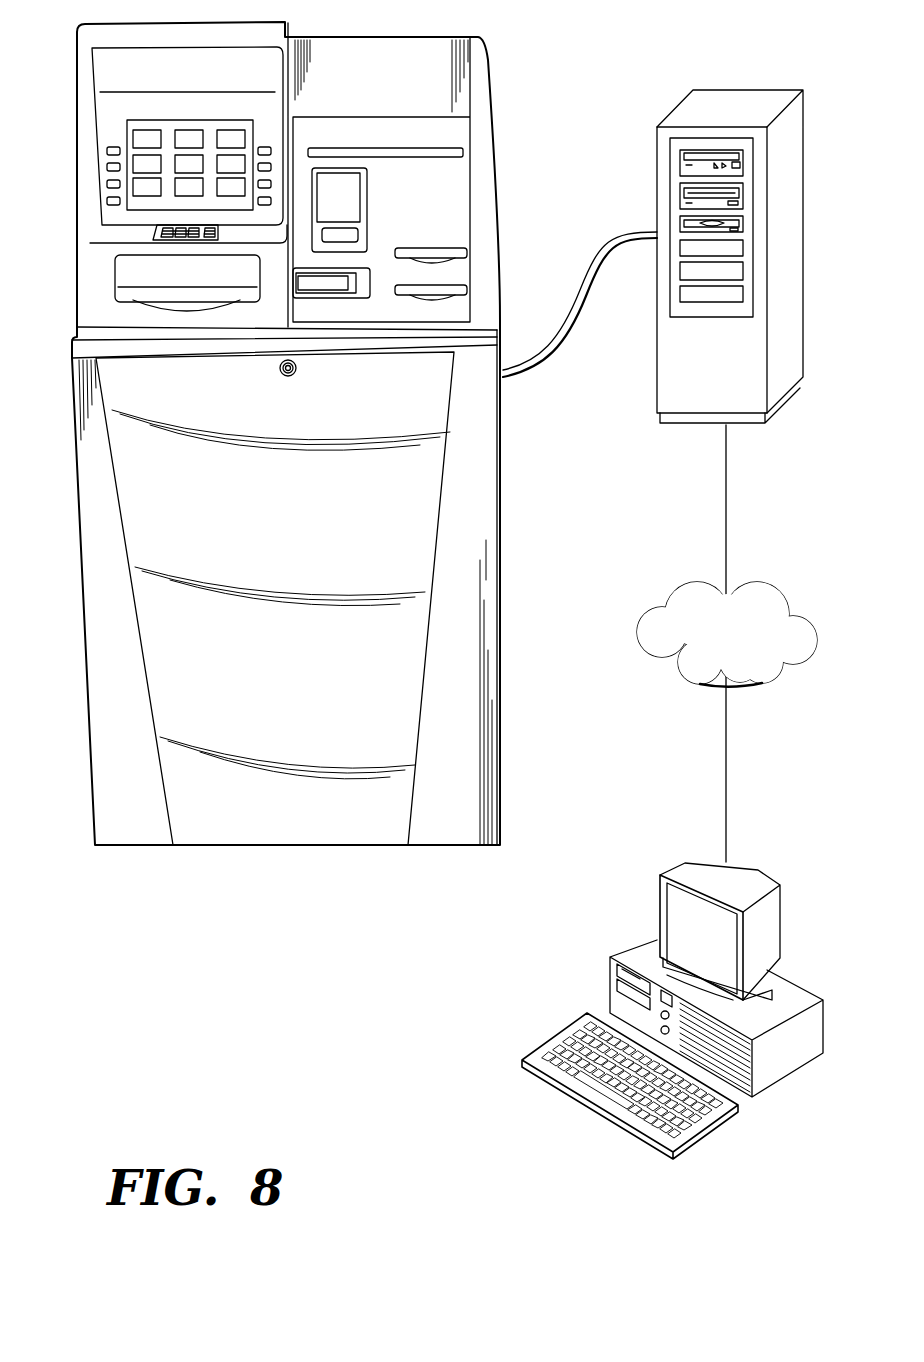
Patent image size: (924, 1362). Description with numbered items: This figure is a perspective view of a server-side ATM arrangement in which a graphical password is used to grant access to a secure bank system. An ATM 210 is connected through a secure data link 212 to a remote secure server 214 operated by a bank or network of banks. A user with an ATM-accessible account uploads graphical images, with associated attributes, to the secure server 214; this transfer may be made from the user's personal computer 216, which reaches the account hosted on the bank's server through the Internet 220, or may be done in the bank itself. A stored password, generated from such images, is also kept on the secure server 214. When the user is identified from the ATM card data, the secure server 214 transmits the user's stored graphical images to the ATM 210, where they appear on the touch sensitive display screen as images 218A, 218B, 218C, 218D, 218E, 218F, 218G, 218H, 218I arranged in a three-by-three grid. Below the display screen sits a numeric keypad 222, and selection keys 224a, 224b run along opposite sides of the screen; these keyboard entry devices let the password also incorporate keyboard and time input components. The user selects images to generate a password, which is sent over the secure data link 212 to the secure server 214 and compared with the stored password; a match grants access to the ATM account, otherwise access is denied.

The ATM 210 is at (294, 433).
The secure data link 212 is at (583, 273).
The remote secure server 214 is at (742, 108).
The personal computer 216 is at (793, 993).
The image 218A is at (147, 139).
The image 218B is at (189, 139).
The image 218C is at (231, 139).
The image 218D is at (147, 164).
The image 218E is at (189, 164).
The image 218F is at (231, 164).
The image 218G is at (147, 187).
The image 218H is at (189, 187).
The image 218I is at (231, 187).
The Internet 220 is at (767, 682).
The numeric keypad 222 is at (146, 222).
The selection keys 224a is at (110, 145).
The selection keys 224b is at (265, 145).